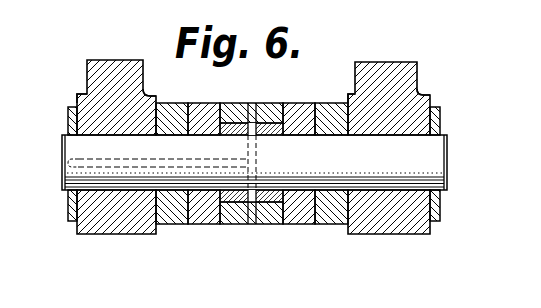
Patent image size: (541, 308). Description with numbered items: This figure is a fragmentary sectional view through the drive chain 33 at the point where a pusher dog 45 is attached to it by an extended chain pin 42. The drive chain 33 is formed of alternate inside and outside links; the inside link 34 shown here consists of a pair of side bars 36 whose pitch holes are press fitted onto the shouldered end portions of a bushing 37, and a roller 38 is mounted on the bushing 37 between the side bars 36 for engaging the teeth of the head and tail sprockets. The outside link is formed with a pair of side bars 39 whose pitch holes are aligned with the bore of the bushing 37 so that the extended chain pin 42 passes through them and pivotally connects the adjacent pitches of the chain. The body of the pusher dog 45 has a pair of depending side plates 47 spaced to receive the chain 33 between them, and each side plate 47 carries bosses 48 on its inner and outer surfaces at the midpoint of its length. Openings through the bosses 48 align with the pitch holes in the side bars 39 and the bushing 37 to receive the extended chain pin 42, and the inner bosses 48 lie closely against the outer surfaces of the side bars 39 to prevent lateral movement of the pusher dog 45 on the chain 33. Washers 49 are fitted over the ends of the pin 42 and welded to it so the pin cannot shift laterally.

The drive chain 33 is at (300, 230).
The inside link 34 is at (333, 231).
The side bar 36 is at (202, 103).
The bushing 37 is at (267, 225).
The roller 38 is at (235, 225).
The side bar 39 is at (330, 103).
The extended chain pin 42 is at (454, 150).
The pusher dog 45 is at (422, 72).
The side plate 47 is at (123, 60).
The boss 48 is at (78, 95).
The washer 49 is at (70, 117).